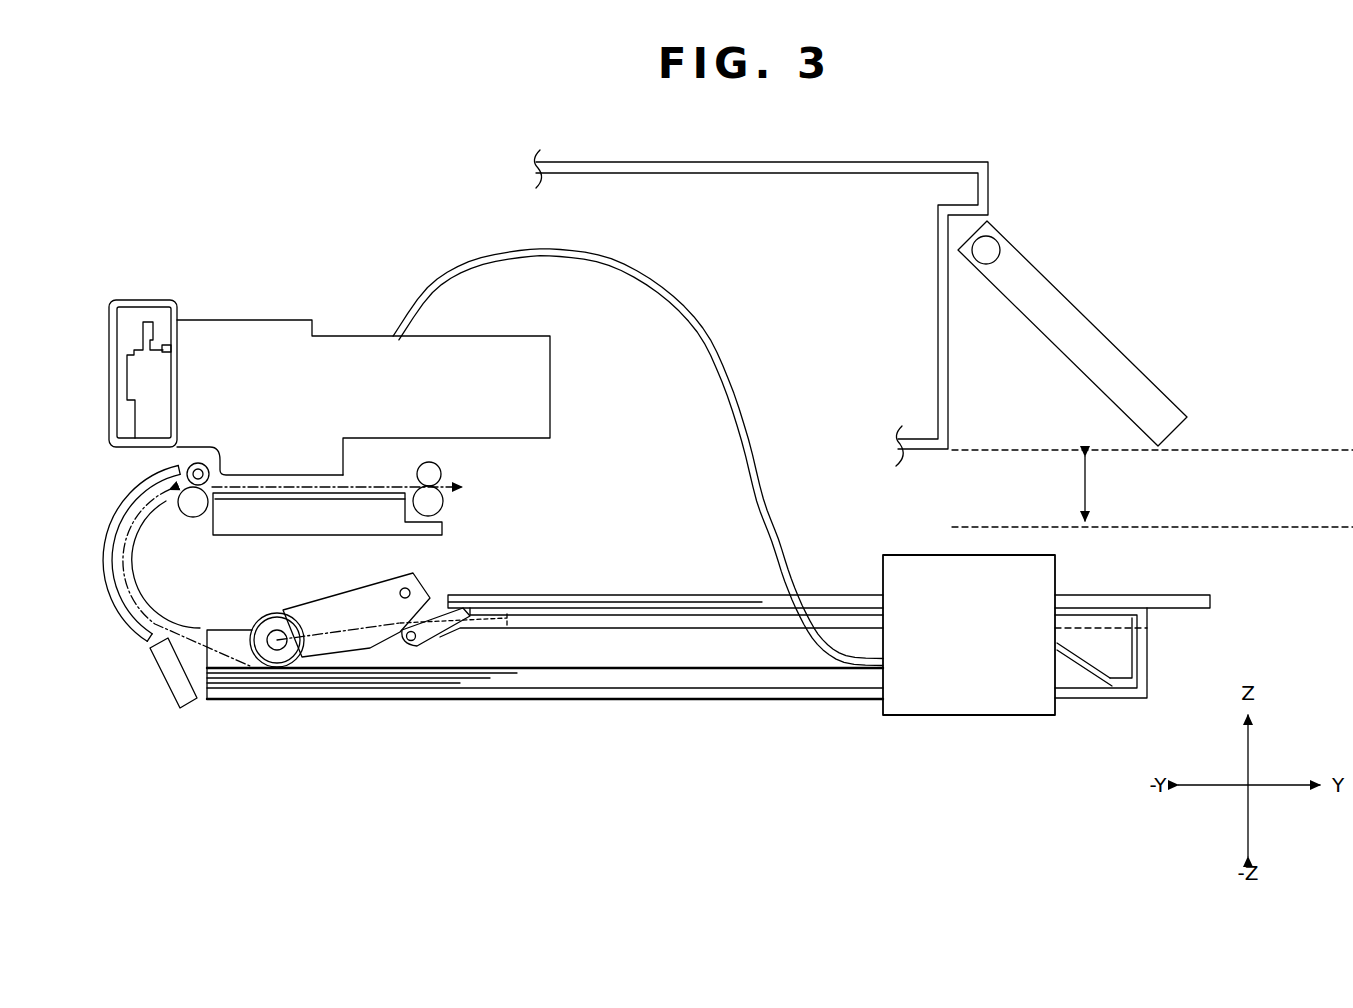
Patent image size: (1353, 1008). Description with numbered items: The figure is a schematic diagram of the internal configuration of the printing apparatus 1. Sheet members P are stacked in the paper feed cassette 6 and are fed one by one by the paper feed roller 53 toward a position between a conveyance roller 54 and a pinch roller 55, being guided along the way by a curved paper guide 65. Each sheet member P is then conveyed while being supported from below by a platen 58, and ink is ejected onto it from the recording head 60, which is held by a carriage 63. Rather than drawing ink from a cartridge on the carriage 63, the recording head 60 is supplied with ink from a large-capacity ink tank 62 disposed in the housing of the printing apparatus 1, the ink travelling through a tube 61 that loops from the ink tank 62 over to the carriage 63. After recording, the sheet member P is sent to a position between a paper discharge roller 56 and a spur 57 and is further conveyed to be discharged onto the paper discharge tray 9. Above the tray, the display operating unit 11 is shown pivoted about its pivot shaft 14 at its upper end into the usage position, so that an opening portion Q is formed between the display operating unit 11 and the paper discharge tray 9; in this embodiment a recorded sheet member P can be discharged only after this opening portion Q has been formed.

The printing apparatus 1 is at (1126, 220).
The display operating unit 11 is at (1133, 362).
The pivot shaft 14 is at (985, 245).
The paper feed cassette 6 is at (1150, 652).
The paper discharge tray 9 is at (1172, 595).
The paper feed roller 53 is at (256, 620).
The conveyance roller 54 is at (195, 519).
The pinch roller 55 is at (185, 472).
The paper discharge roller 56 is at (444, 503).
The spur 57 is at (441, 471).
The platen 58 is at (298, 537).
The recording head 60 is at (273, 462).
The tube 61 is at (656, 284).
The large-capacity ink tank 62 is at (970, 717).
The carriage 63 is at (232, 318).
The paper guide 65 is at (108, 618).
The sheet member P is at (660, 686).
The opening portion Q is at (1152, 488).